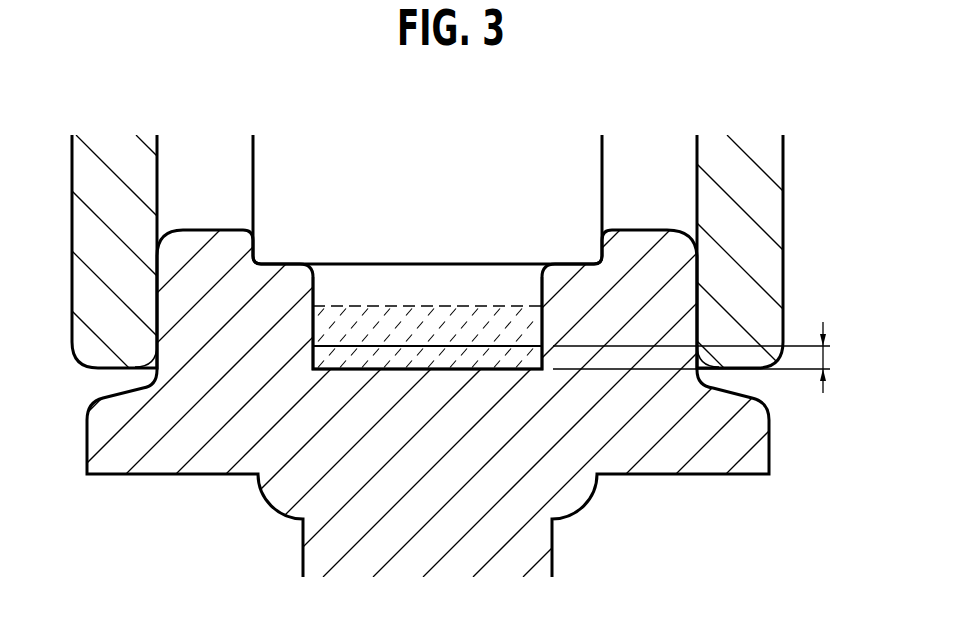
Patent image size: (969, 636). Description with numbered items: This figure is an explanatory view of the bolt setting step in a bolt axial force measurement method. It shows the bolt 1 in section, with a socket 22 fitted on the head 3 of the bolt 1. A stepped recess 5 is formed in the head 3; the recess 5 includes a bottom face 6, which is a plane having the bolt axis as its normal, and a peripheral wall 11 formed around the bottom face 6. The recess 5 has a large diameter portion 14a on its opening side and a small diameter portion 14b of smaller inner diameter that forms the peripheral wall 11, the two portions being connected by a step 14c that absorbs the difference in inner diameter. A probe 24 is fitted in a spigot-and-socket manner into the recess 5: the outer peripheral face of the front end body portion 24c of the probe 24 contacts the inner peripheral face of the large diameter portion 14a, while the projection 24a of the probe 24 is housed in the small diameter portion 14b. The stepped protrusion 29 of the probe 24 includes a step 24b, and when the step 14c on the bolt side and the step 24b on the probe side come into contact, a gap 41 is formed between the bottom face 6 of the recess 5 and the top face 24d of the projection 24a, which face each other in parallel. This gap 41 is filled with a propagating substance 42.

The bolt 1 is at (552, 535).
The head 3 is at (207, 310).
The recess 5 is at (316, 304).
The bottom face 6 is at (505, 355).
The peripheral wall 11 is at (291, 256).
The large diameter portion 14a is at (594, 256).
The small diameter portion 14b is at (540, 330).
The step 14c is at (255, 262).
The socket 22 is at (80, 283).
The probe 24 is at (300, 202).
The projection 24a is at (372, 290).
The step 24b is at (520, 278).
The front end body portion 24c is at (489, 250).
The top face 24d is at (430, 349).
The stepped protrusion 29 is at (397, 248).
The gap 41 is at (826, 356).
The propagating substance 42 is at (370, 367).